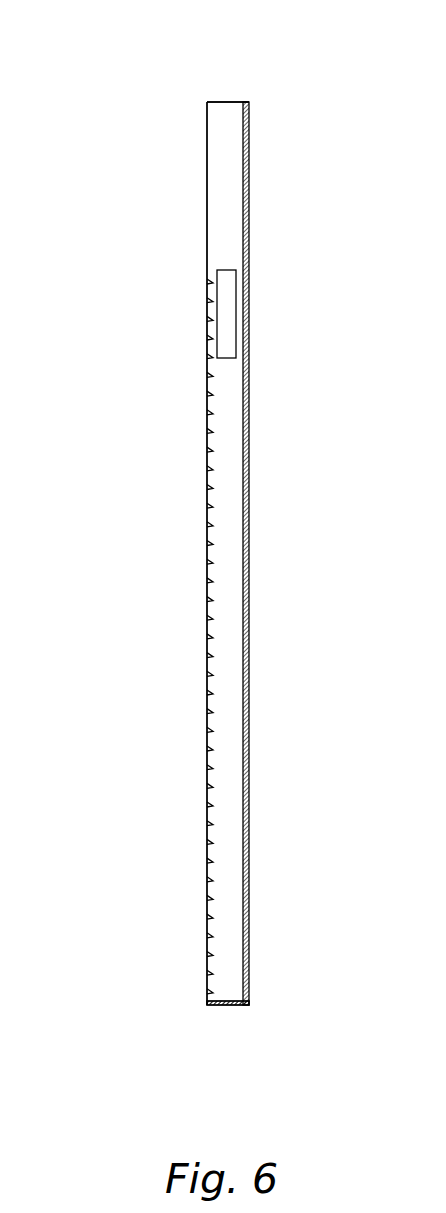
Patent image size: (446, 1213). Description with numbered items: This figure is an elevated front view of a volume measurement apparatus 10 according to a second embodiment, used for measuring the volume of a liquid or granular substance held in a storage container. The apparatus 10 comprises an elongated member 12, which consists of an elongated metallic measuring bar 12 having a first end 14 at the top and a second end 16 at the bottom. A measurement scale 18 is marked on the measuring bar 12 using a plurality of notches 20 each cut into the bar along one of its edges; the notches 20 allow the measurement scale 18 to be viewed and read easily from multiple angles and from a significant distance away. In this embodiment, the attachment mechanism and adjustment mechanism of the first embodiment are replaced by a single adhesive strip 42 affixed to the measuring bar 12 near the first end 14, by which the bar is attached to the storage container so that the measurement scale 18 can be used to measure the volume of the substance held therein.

The volume measurement apparatus 10 is at (93, 268).
The elongated member 12 is at (233, 560).
The first end 14 is at (227, 102).
The second end 16 is at (220, 1006).
The measurement scale 18 is at (207, 359).
The notches 20 is at (210, 732).
The adhesive strip 42 is at (227, 314).